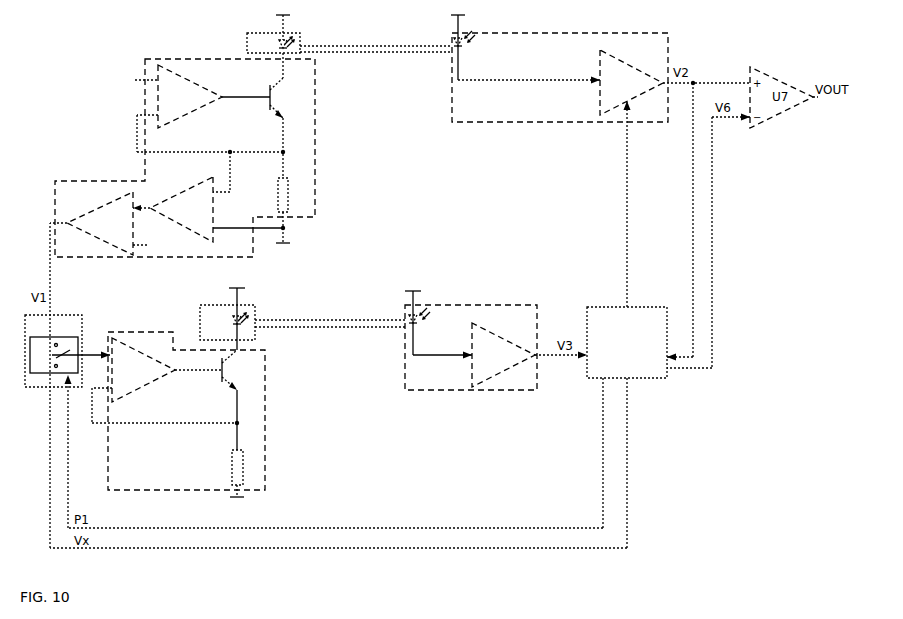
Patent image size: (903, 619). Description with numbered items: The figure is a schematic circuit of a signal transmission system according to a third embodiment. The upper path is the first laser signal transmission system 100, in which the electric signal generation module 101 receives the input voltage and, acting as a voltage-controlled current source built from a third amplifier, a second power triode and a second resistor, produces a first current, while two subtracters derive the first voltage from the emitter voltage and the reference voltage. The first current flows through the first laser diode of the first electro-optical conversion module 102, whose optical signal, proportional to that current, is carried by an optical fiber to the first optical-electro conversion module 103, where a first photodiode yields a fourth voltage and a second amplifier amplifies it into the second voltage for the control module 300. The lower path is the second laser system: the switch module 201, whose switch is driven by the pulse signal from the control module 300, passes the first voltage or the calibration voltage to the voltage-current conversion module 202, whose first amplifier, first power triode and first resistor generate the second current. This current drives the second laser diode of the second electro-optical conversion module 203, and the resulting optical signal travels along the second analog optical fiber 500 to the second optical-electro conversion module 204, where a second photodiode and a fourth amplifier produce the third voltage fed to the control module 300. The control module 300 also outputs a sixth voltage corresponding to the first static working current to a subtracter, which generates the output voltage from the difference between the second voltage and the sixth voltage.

The first laser signal transmission system 100 is at (376, 45).
The electric signal generation module 101 is at (182, 58).
The first electro-optical conversion module 102 is at (256, 33).
The first optical-electro conversion module 103 is at (480, 34).
The switch module 201 is at (75, 313).
The voltage-current conversion module 202 is at (143, 331).
The second electro-optical conversion module 203 is at (250, 305).
The second optical-electro conversion module 204 is at (470, 305).
The control module 300 is at (627, 342).
The second analog optical fiber 500 is at (328, 319).